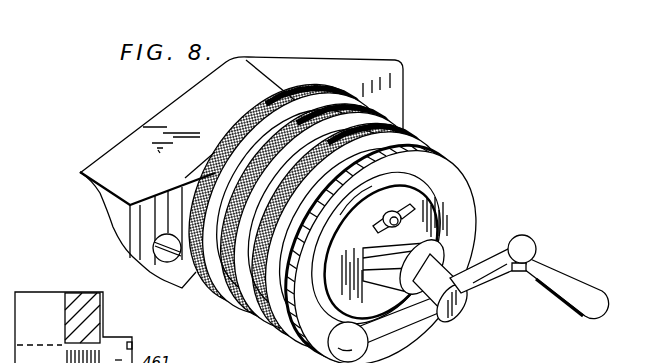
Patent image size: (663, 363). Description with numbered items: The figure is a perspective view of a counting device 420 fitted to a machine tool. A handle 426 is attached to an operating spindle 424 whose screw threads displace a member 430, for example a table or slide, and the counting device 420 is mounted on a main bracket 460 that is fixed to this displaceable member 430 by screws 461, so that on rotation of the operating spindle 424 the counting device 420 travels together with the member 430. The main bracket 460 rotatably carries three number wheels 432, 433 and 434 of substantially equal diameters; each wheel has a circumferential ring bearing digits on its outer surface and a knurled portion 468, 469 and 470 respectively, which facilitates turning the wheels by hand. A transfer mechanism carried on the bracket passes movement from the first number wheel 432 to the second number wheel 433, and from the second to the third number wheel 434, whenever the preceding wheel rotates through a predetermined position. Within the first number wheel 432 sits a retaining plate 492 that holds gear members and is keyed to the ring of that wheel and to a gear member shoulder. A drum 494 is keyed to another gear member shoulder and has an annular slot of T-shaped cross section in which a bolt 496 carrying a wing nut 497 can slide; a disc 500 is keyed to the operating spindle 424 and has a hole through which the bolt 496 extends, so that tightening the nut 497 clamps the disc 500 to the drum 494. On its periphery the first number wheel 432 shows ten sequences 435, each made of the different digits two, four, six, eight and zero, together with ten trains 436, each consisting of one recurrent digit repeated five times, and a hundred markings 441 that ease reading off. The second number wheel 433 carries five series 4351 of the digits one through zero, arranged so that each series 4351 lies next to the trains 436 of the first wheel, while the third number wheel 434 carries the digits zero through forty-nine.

The counting device 420 is at (405, 83).
The operating spindle 424 is at (466, 304).
The handle 426 is at (556, 274).
The member 430 is at (125, 189).
The first number wheel 432 is at (265, 278).
The second number wheel 433 is at (237, 253).
The third number wheel 434 is at (208, 253).
The sequences 435 is at (382, 187).
The trains 436 is at (185, 178).
The series 4351 is at (220, 147).
The markings 441 is at (372, 292).
The main bracket 460 is at (137, 218).
The screws 461 is at (150, 255).
The knurled portion 468 is at (372, 135).
The knurled portion 469 is at (350, 97).
The knurled portion 470 is at (322, 90).
The retaining plate 492 is at (425, 163).
The drum 494 is at (362, 193).
The bolt 496 is at (400, 220).
The wing nut 497 is at (403, 205).
The disc 500 is at (446, 234).